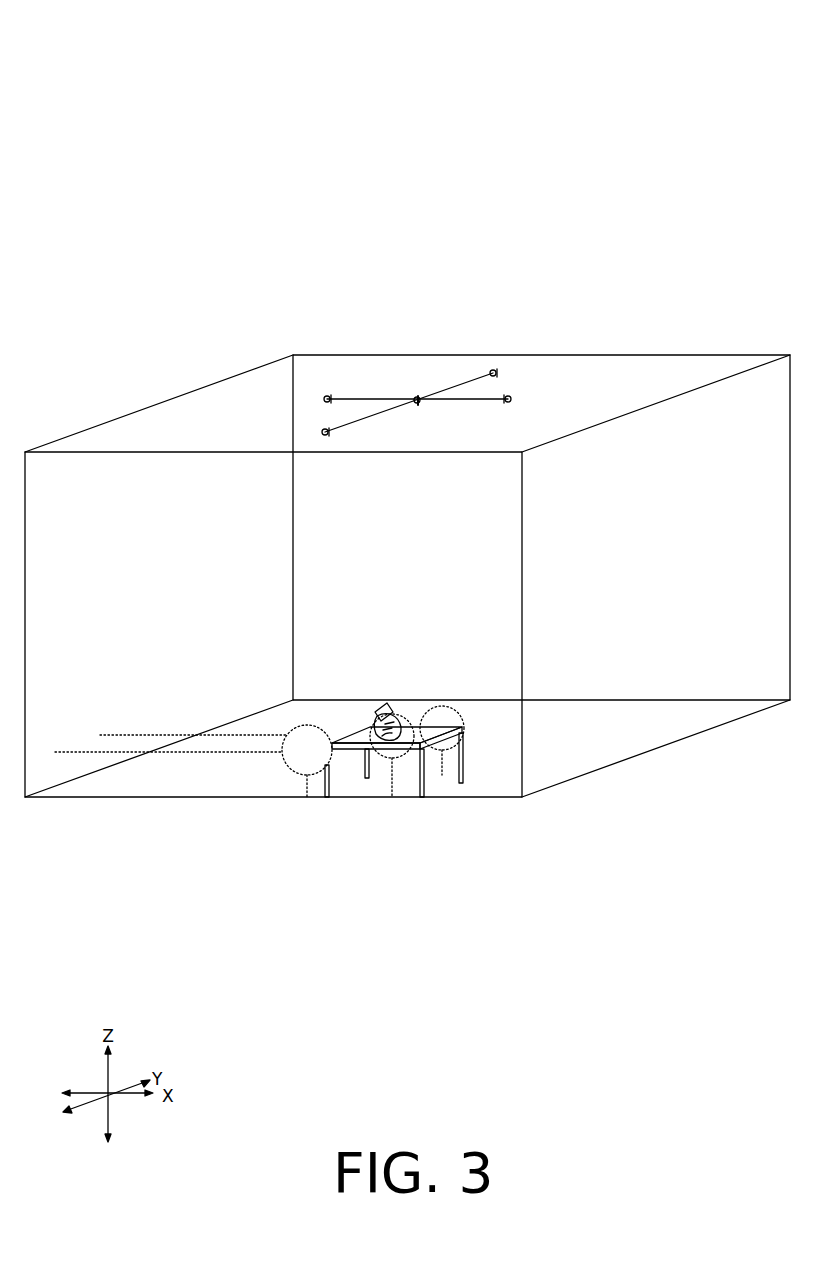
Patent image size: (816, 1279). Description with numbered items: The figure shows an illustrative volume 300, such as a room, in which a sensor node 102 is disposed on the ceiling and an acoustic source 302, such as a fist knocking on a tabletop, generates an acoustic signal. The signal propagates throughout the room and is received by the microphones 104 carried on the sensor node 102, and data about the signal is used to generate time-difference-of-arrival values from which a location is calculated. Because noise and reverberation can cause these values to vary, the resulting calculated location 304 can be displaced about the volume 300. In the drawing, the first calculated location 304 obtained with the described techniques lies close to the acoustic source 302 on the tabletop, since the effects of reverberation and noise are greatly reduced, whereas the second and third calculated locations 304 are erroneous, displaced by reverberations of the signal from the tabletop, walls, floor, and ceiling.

The volume 300 is at (688, 44).
The sensor node 102 is at (448, 334).
The microphones 104 is at (494, 370).
The acoustic source 302 is at (398, 757).
The calculated location 304 is at (352, 836).